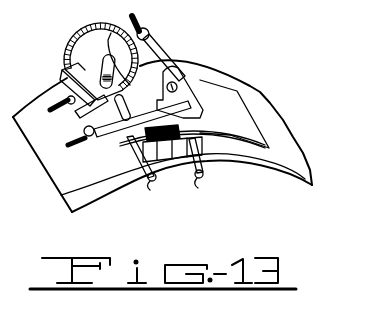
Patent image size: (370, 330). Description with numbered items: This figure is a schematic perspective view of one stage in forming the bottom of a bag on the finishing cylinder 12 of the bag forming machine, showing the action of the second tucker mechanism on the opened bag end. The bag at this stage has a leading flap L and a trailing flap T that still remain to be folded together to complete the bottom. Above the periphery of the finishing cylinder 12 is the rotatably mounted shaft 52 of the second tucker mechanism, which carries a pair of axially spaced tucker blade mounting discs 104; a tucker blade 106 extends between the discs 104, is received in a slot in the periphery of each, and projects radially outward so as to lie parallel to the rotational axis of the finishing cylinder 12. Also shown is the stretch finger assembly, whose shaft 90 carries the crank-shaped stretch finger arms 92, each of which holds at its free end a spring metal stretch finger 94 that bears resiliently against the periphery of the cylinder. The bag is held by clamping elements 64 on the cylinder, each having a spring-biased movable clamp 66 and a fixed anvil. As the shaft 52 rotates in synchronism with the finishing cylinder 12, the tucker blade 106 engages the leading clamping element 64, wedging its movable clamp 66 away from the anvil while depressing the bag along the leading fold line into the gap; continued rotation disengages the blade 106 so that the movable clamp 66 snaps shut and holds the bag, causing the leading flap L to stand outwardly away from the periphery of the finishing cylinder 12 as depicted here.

The finishing cylinder 12 is at (85, 197).
The tucker blade mounting discs 104 is at (95, 44).
The leading flap L is at (97, 110).
The shaft 52 is at (128, 93).
The spring metal stretch finger 94 is at (52, 113).
The stretch finger arms 92 is at (157, 35).
The shaft 90 is at (137, 17).
The trailing flap T is at (196, 100).
The tucker blade 106 is at (195, 123).
The movable clamp 66 is at (147, 188).
The clamping elements 64 is at (155, 203).